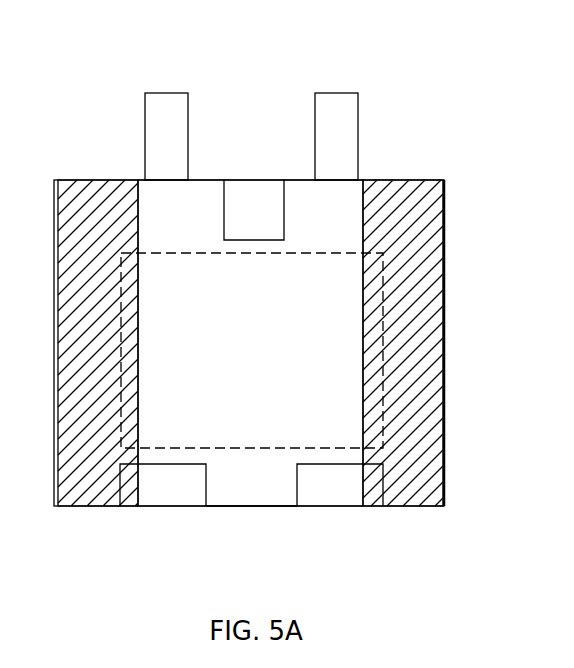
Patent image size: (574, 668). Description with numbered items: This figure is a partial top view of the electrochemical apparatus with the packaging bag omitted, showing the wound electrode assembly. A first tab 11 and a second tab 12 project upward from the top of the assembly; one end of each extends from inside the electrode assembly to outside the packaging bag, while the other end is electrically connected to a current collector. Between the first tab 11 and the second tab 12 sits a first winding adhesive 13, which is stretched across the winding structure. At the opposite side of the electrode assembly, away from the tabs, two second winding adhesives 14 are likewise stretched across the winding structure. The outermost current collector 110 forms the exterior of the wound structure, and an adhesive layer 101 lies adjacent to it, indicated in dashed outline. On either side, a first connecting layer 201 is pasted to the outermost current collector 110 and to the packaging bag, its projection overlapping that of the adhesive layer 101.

The first tab 11 is at (163, 132).
The second tab 12 is at (335, 132).
The first winding adhesive 13 is at (253, 222).
The second winding adhesive 14 is at (163, 477).
The adhesive layer 101 is at (237, 430).
The outermost current collector 110 is at (283, 478).
The first connecting layer 201 is at (73, 200).